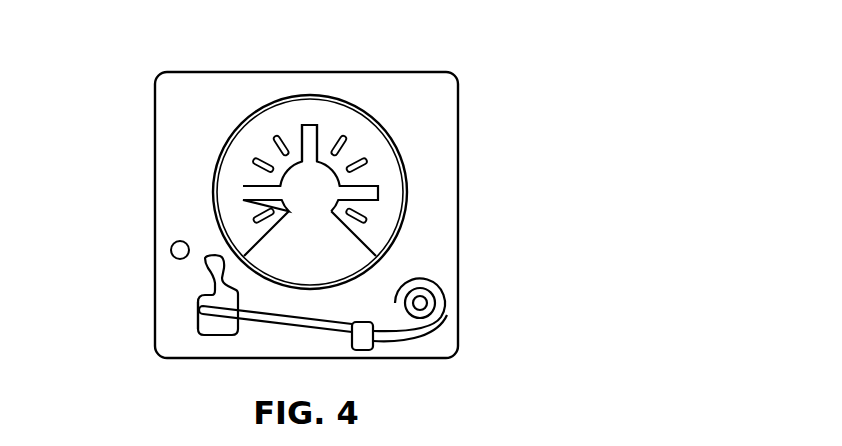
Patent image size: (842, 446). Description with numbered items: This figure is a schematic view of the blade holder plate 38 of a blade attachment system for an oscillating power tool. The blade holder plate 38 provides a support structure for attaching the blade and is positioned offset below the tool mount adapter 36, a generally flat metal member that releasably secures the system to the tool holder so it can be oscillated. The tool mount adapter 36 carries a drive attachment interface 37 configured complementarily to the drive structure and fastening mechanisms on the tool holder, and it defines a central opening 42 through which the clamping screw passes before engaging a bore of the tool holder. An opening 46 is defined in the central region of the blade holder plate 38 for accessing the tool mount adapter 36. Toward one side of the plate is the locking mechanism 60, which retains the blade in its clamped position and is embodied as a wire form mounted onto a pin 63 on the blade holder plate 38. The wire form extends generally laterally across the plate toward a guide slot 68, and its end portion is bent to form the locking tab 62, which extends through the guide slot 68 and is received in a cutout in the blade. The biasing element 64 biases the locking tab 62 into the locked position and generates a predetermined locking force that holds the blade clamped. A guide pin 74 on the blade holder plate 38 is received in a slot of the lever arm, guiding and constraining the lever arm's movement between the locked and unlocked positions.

The tool mount adapter 36 is at (378, 140).
The drive attachment interface 37 is at (295, 133).
The blade holder plate 38 is at (173, 130).
The central opening 42 is at (315, 194).
The opening 46 is at (313, 261).
The locking mechanism 60 is at (280, 327).
The locking tab 62 is at (193, 302).
The pin 63 is at (436, 310).
The biasing element 64 is at (263, 332).
The guide slot 68 is at (192, 323).
The guide pin 74 is at (162, 237).